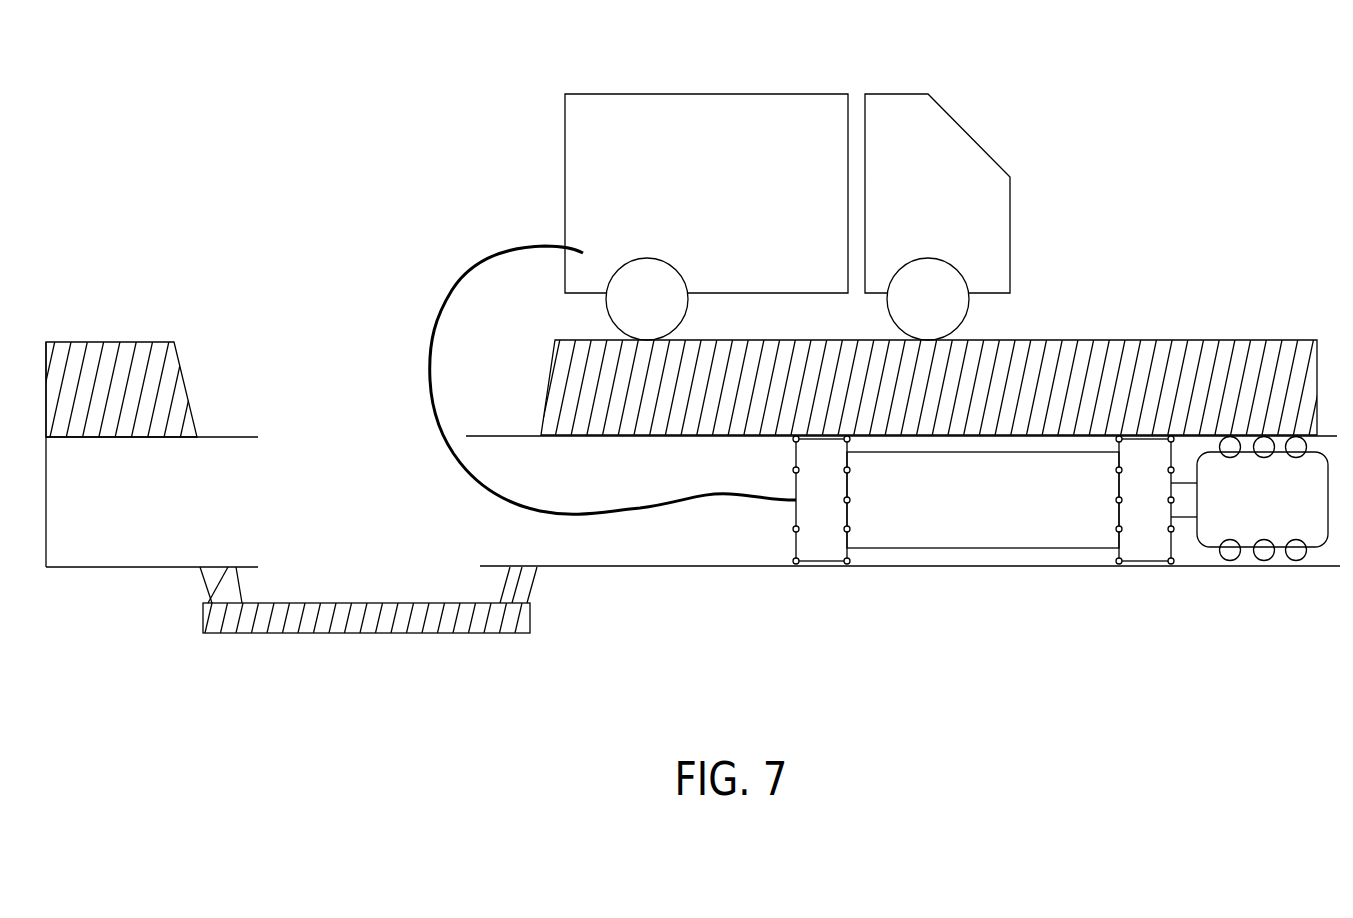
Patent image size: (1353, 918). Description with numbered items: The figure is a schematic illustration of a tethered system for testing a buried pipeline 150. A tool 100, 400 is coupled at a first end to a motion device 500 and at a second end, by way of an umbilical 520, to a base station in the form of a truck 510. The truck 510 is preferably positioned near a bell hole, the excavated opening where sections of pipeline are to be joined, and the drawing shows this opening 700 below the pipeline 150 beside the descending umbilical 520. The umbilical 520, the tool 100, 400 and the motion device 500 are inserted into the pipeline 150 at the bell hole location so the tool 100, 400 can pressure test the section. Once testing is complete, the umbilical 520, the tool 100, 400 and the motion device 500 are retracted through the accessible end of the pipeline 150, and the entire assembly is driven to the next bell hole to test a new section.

The tool 100 is at (983, 527).
The tool 400 is at (965, 527).
The pipeline 150 is at (712, 567).
The motion device 500 is at (1252, 518).
The truck 510 is at (706, 118).
The umbilical 520 is at (472, 262).
The sump / manhole bottom 700 is at (343, 622).